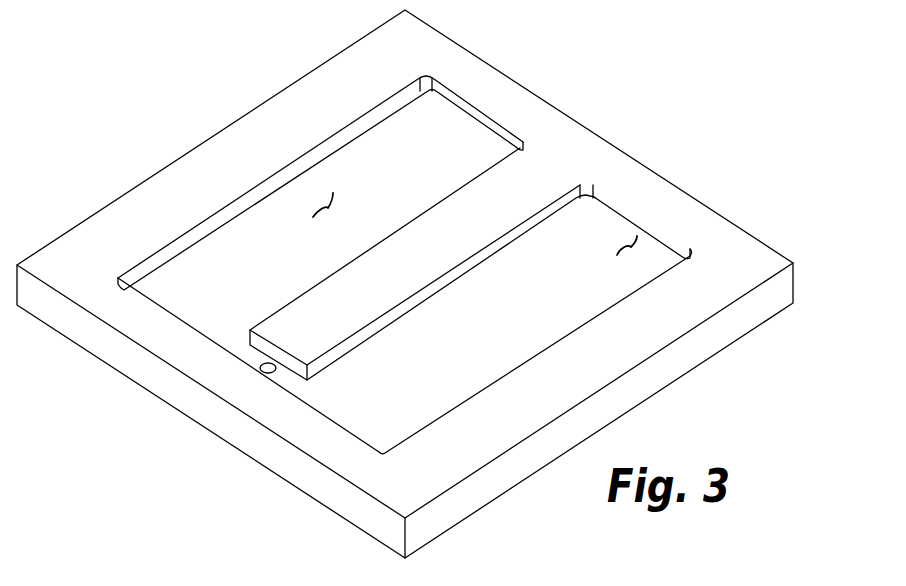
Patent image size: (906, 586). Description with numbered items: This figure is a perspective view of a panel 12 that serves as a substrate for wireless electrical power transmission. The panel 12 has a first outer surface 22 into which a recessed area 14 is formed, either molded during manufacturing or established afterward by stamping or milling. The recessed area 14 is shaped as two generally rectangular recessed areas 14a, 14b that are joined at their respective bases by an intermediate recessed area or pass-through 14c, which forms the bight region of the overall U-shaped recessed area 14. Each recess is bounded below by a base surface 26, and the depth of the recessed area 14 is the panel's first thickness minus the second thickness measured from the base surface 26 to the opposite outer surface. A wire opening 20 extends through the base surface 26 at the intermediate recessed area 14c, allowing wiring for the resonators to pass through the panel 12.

The panel 12 is at (760, 260).
The recessed area 14 is at (238, 205).
The rectangular recessed area 14a is at (450, 110).
The rectangular recessed area 14b is at (665, 232).
The intermediate recessed area 14c is at (262, 340).
The wire opening 20 is at (272, 368).
The first outer surface 22 is at (573, 162).
The base surface 26 is at (313, 217).